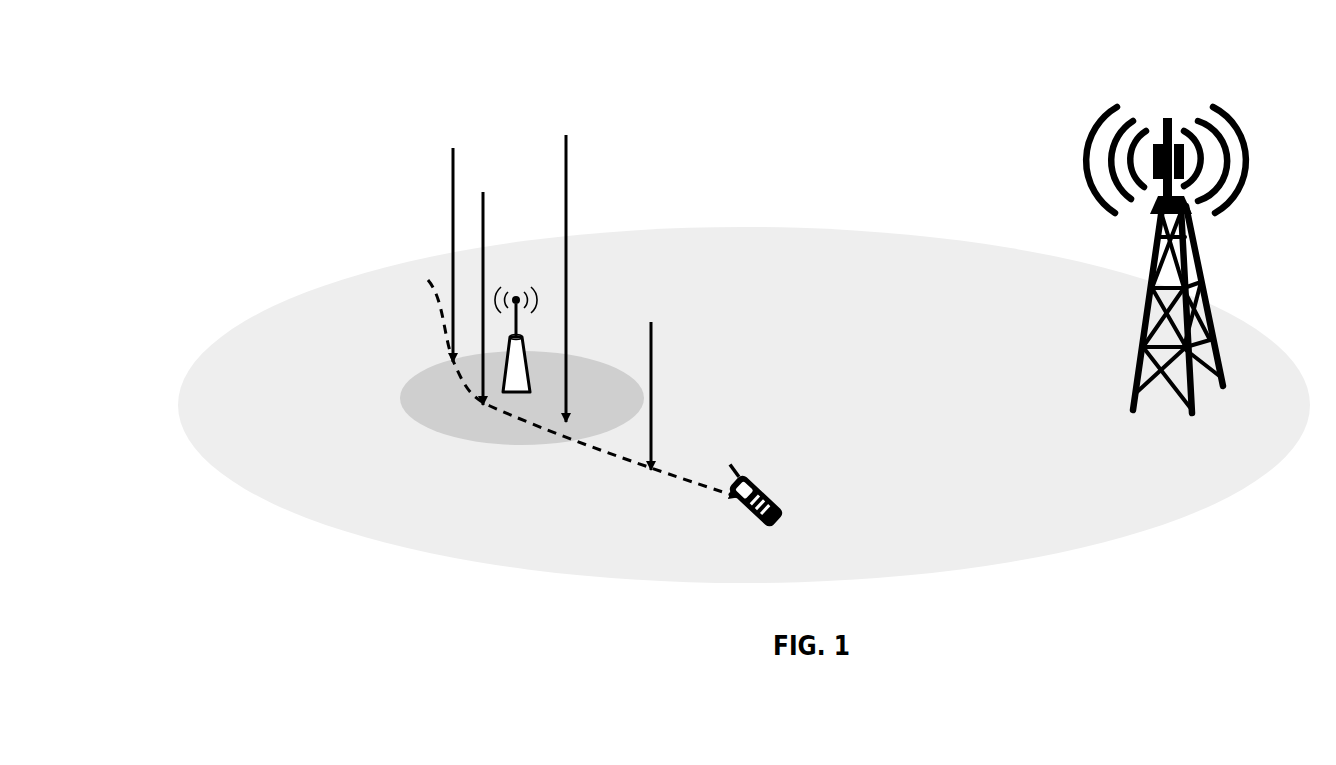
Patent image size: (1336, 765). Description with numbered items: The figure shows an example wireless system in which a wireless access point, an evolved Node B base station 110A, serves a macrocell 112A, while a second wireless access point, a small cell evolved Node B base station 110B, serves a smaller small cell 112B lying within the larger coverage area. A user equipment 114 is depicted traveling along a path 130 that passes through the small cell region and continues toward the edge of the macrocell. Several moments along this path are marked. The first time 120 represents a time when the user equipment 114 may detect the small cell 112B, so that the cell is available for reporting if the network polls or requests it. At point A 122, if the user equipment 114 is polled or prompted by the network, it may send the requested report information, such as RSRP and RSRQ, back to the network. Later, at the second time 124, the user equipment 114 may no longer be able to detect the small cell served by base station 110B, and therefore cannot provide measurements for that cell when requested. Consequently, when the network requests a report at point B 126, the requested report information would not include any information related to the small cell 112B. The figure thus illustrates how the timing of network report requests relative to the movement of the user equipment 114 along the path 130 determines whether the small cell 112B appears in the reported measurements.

The evolved Node B base station 110A is at (1191, 112).
The small cell evolved Node B base station 110B is at (505, 290).
The macrocell 112A is at (1045, 540).
The small cell 112B is at (405, 420).
The user equipment 114 is at (738, 500).
The time T1 120 is at (478, 110).
The point A 122 is at (486, 150).
The time T2 124 is at (575, 115).
The point B 126 is at (656, 330).
The path 130 is at (700, 472).